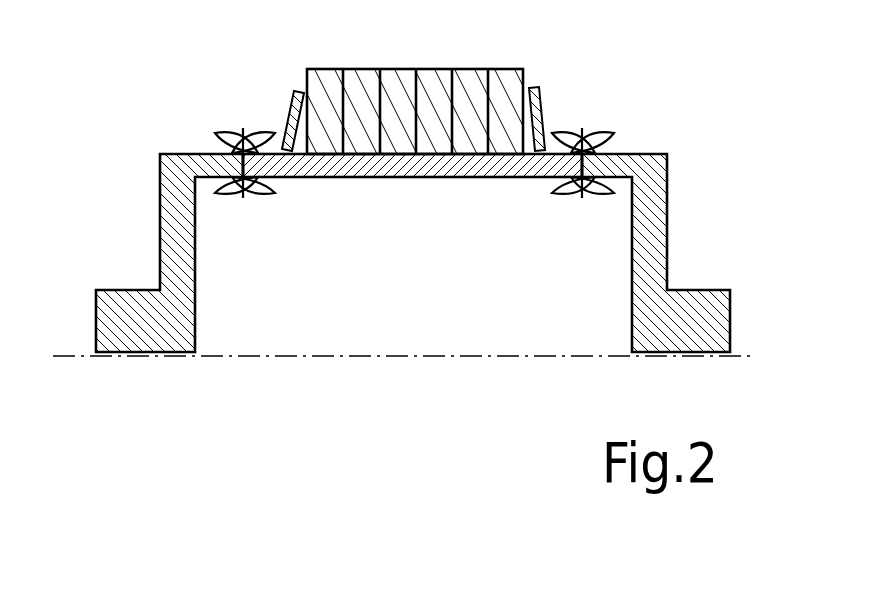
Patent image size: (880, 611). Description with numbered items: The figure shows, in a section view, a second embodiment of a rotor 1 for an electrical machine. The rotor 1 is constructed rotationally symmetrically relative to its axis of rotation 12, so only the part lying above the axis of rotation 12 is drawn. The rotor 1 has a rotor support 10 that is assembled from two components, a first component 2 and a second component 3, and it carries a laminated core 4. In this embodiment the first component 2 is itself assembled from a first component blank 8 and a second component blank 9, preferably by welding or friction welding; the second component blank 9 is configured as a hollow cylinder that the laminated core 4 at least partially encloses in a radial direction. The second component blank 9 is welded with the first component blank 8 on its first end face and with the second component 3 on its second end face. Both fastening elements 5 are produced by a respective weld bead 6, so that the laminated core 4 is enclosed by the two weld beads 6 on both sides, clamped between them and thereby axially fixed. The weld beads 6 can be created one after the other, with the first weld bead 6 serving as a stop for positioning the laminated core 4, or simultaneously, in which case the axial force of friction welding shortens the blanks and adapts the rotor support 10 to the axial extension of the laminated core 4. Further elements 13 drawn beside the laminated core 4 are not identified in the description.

The rotor 1 is at (151, 366).
The first component 2 is at (679, 169).
The second component 3 is at (168, 238).
The laminated core 4 is at (396, 98).
The fastening element 5 is at (279, 199).
The weld bead 6 is at (238, 138).
The first component blank 8 is at (650, 228).
The second component blank 9 is at (410, 180).
The rotor support 10 is at (523, 288).
The axis of rotation 12 is at (313, 355).
The contact pin 13 is at (299, 91).